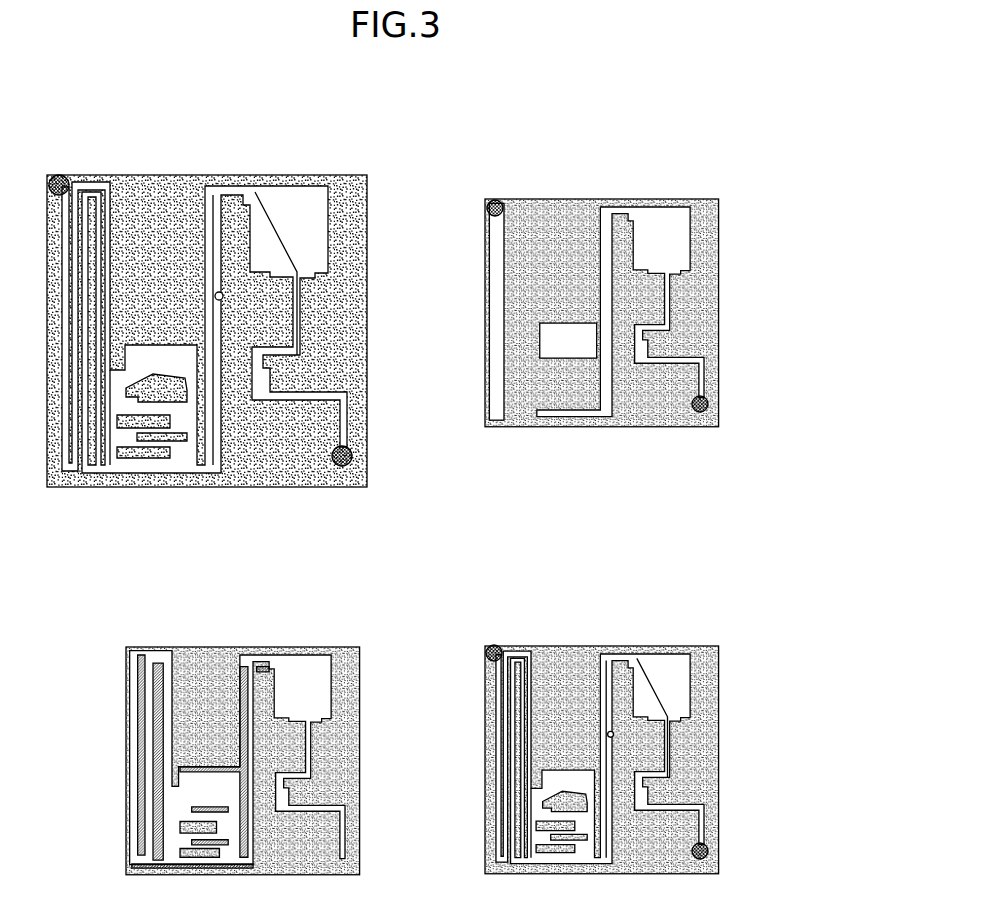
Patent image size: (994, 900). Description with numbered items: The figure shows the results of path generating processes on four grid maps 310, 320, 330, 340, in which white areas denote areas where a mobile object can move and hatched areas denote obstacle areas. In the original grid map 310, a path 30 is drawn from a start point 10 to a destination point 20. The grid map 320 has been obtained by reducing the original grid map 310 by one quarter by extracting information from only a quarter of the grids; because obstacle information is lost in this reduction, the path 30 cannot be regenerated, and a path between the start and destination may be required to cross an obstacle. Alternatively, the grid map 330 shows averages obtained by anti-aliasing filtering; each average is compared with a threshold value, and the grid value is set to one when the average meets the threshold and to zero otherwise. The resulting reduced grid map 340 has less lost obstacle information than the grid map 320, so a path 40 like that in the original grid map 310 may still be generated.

The start point 10 is at (54, 178).
The destination point 20 is at (351, 463).
The path 30 is at (275, 228).
The path 40 is at (652, 685).
The original grid map 310 is at (213, 302).
The reduced grid map 320 is at (666, 198).
The grid map 330 is at (306, 646).
The reduced grid map 340 is at (631, 734).